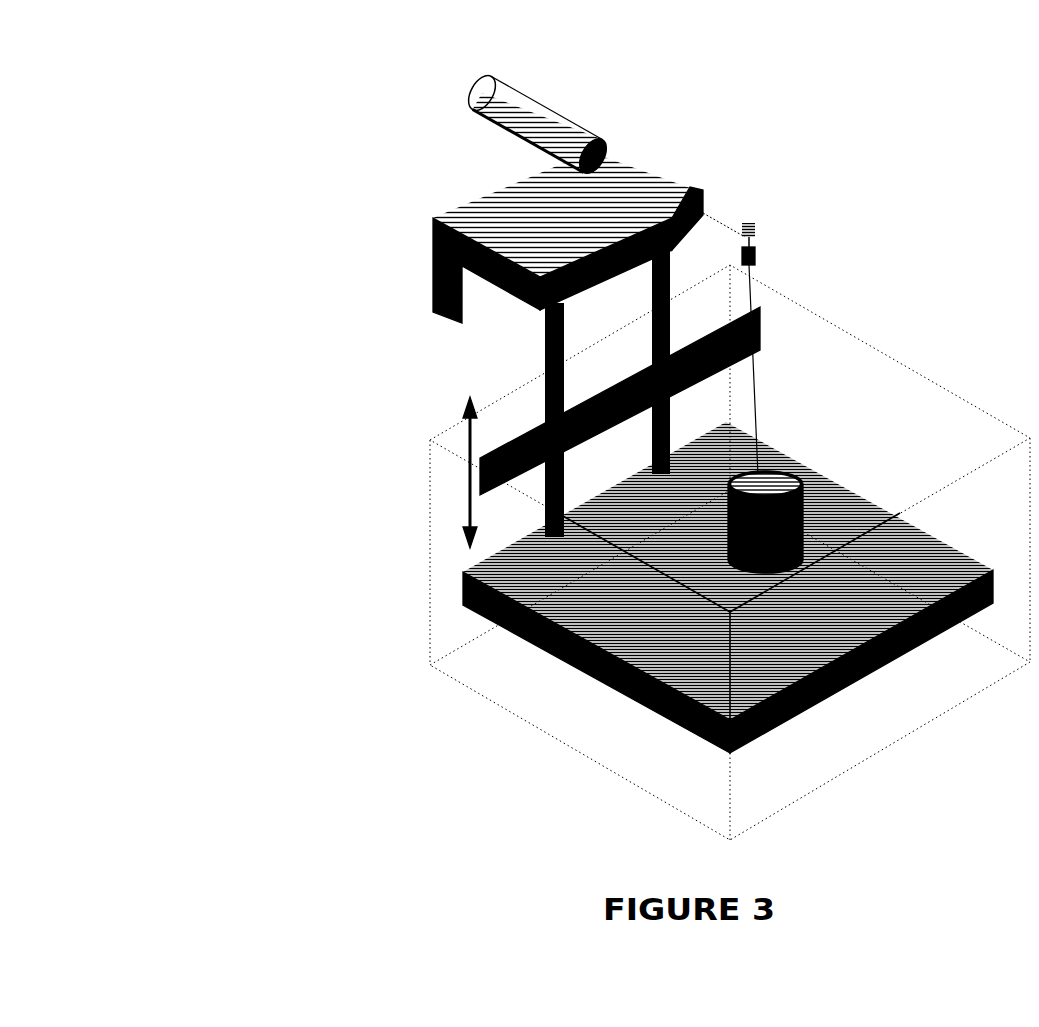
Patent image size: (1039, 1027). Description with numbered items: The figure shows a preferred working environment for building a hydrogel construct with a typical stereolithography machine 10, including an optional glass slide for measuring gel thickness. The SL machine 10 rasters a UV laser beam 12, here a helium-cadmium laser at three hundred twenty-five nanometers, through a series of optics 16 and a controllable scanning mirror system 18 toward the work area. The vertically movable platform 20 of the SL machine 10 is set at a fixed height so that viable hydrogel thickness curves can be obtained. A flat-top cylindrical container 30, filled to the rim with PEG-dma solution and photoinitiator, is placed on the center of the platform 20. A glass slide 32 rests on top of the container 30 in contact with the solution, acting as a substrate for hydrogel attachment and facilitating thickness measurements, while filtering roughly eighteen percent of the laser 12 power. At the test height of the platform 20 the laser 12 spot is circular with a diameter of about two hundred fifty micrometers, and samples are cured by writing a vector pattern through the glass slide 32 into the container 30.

The SL machine 10 is at (340, 391).
The UV laser beam 12 is at (570, 90).
The optics 16 is at (706, 173).
The controllable scanning mirror system 18 is at (774, 240).
The vertically movable platform 20 is at (558, 651).
The flat-top cylindrical container 30 is at (767, 567).
The glass slide 32 is at (801, 461).